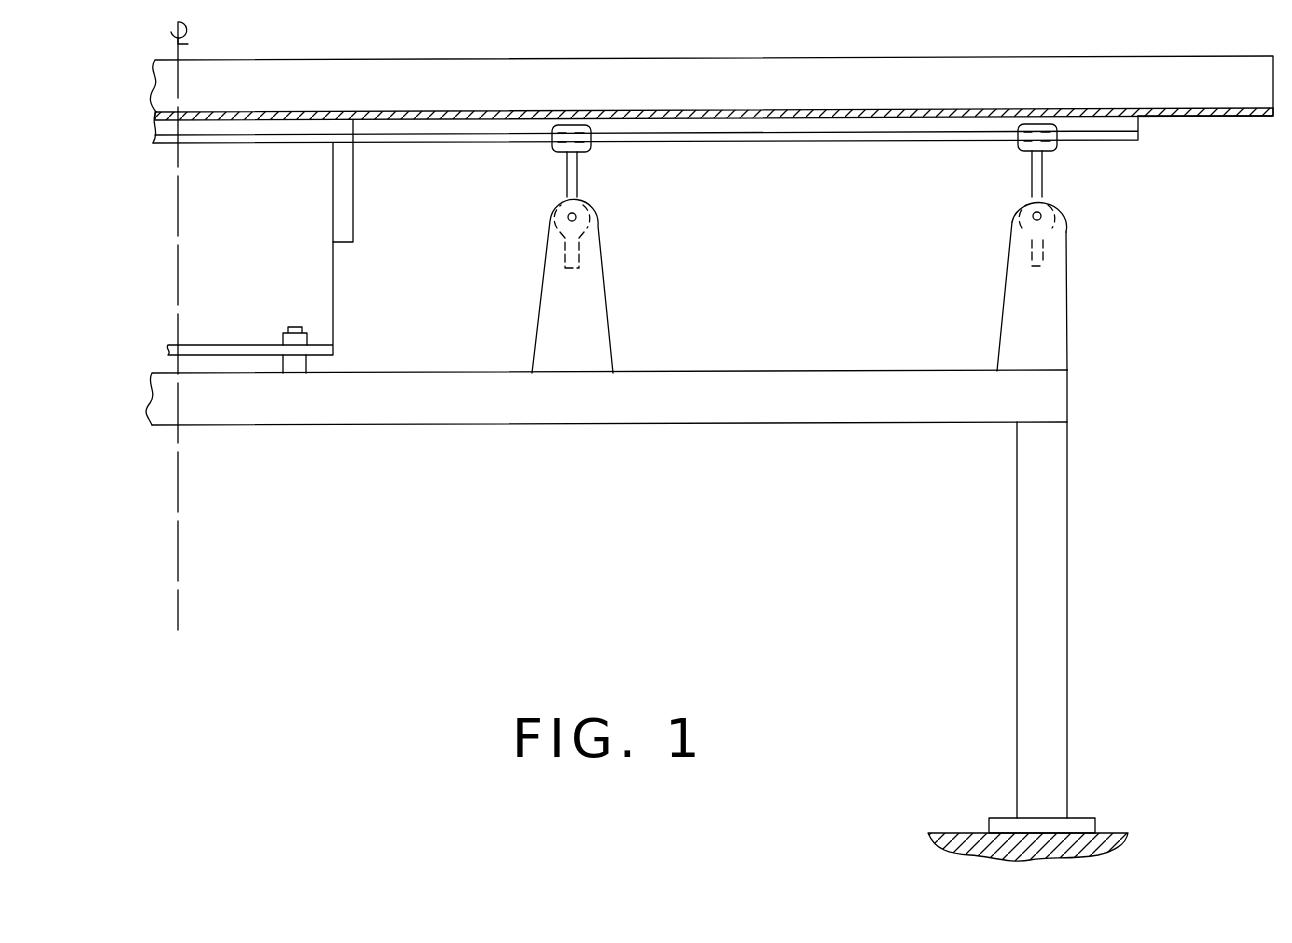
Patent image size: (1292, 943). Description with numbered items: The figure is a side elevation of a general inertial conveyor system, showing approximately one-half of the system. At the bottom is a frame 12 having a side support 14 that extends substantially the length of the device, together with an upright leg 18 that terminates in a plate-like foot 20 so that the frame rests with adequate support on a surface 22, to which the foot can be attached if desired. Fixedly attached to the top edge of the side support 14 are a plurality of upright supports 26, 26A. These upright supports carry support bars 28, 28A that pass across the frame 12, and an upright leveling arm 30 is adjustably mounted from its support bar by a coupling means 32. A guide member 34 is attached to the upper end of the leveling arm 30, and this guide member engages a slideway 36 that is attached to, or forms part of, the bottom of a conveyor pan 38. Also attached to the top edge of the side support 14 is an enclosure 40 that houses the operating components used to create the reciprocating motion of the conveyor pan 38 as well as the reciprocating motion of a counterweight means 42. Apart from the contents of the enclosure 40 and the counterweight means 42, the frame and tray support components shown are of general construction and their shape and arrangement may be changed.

The frame 12 is at (660, 424).
The side support 14 is at (410, 418).
The upright leg 18 is at (1016, 508).
The plate-like foot 20 is at (1010, 818).
The surface 22 is at (956, 833).
The upright support 26 is at (1069, 303).
The upright support 26A is at (608, 303).
The support bar 28 is at (1042, 218).
The support bar 28A is at (576, 216).
The leveling arm 30 is at (1031, 181).
The coupling means 32 is at (1021, 201).
The guide member 34 is at (1026, 152).
The slideway 36 is at (872, 141).
The conveyor pan 38 is at (1217, 120).
The enclosure 40 is at (336, 313).
The counterweight means 42 is at (357, 171).